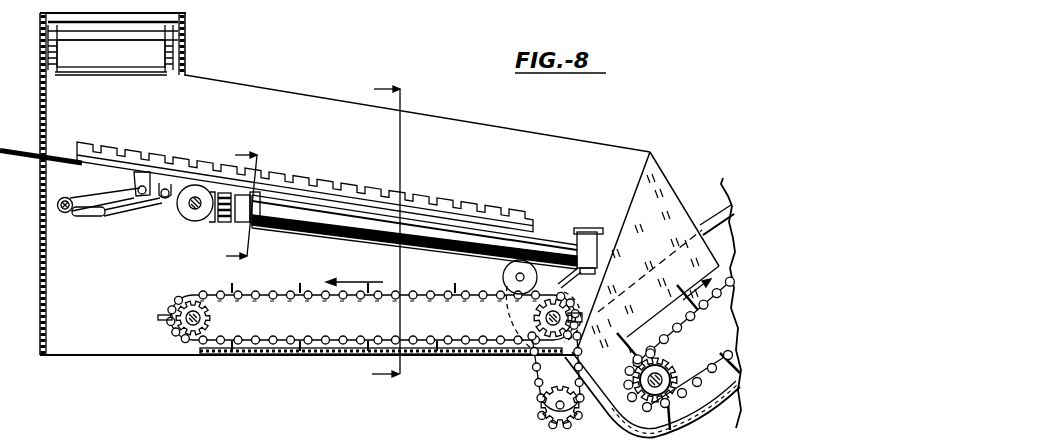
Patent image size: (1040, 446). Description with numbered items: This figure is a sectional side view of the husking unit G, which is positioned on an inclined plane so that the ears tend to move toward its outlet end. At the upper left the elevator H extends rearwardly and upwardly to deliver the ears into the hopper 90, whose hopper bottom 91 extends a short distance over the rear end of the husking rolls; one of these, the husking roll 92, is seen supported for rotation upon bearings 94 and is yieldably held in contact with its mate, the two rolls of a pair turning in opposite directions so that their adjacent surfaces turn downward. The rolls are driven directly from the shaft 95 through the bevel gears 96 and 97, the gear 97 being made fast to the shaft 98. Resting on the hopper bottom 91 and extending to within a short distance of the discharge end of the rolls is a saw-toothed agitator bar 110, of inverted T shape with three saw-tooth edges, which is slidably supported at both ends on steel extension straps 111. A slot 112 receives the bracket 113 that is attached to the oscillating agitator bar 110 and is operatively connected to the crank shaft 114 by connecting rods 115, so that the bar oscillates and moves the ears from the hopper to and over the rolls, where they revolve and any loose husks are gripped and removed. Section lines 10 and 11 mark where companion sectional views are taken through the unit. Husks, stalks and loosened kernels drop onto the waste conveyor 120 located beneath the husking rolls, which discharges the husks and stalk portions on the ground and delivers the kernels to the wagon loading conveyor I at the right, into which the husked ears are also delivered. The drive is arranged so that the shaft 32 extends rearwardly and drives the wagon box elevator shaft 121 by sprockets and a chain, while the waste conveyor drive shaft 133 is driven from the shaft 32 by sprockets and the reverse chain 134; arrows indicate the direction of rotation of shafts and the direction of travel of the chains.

The hopper 90 is at (379, 184).
The elevator H is at (113, 48).
The hopper bottom 91 is at (85, 171).
The husking roll 92 is at (413, 230).
The bearings 94 is at (242, 222).
The shaft 95 is at (208, 217).
The bevel gear 96 is at (188, 204).
The bevel gear 97 is at (211, 222).
The shaft 98 is at (224, 220).
The saw-toothed agitator bar 110 is at (460, 202).
The steel extension straps 111 is at (53, 156).
The slot 112 is at (128, 180).
The bracket 113 is at (142, 186).
The crank shaft 114 is at (84, 216).
The connecting rods 115 is at (76, 199).
The section line 10 is at (232, 205).
The section line 11 is at (377, 233).
The husking unit G is at (481, 124).
The waste conveyor 120 is at (283, 289).
The waste conveyor drive shaft 133 is at (569, 311).
The reverse chain 134 is at (537, 379).
The shaft 32 is at (548, 413).
The wagon loading conveyor I is at (653, 303).
The wagon box elevator shaft 121 is at (672, 372).